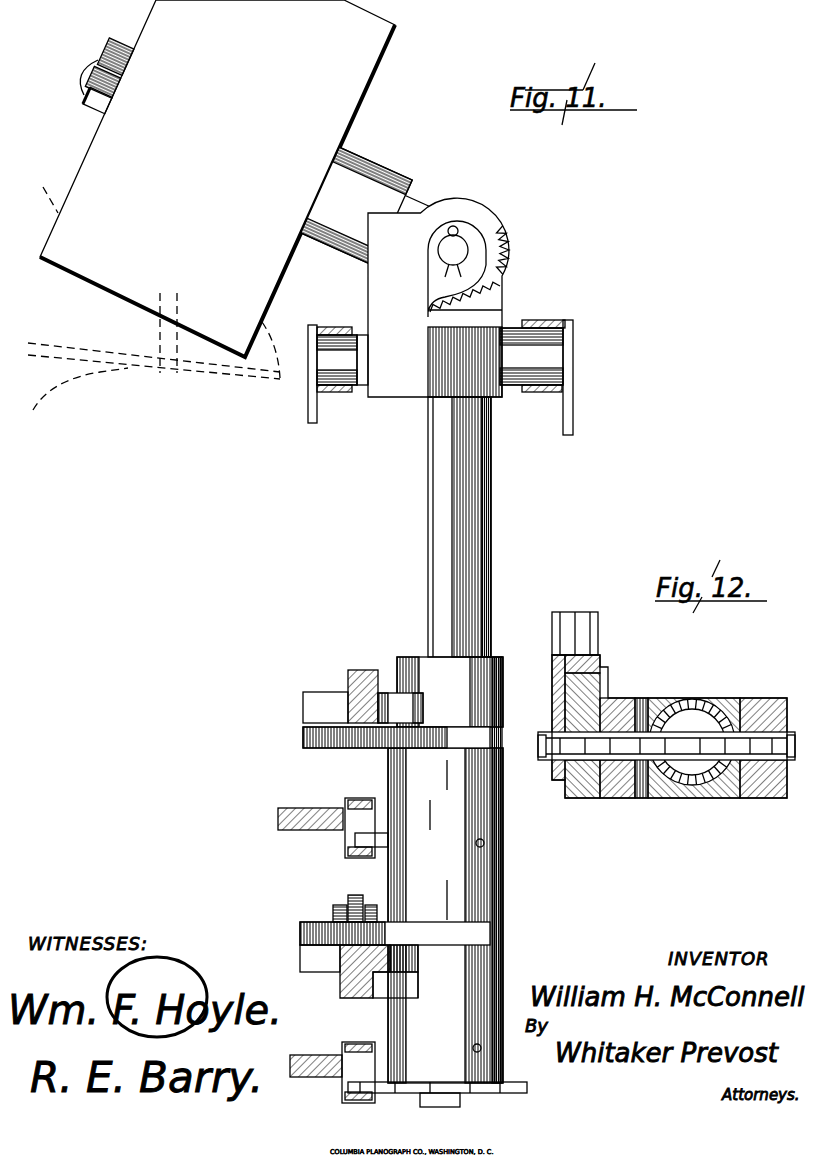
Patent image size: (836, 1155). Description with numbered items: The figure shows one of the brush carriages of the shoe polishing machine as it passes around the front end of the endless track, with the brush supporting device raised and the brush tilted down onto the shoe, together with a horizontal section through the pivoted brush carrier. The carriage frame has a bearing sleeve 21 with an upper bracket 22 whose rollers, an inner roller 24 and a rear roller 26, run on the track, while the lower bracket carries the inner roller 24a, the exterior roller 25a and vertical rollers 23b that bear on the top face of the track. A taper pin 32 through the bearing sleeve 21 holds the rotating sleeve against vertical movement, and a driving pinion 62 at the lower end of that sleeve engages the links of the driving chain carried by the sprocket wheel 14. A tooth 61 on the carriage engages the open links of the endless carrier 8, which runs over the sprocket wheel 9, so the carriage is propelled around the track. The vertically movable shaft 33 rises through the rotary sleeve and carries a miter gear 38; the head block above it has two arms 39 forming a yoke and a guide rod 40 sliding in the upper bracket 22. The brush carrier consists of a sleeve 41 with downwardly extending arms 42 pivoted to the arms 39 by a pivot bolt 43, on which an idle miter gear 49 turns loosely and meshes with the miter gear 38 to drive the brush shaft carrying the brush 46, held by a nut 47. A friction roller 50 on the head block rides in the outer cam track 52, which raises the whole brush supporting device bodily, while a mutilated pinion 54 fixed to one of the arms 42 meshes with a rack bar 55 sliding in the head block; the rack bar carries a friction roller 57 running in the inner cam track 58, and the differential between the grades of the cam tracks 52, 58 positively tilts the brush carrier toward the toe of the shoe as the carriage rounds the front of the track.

In FIG. 11, the endless carrier 8 is at (350, 800).
In FIG. 11, the sprocket wheel 9 is at (286, 808).
In FIG. 11, the sprocket wheel 14 is at (310, 1057).
In FIG. 11, the bearing sleeve 21 is at (503, 900).
In FIG. 11, the upper bracket 22 is at (305, 730).
In FIG. 11, the vertical rollers 23b is at (340, 905).
In FIG. 11, the inner roller 24 is at (322, 690).
In FIG. 11, the inner roller of lower bracket 24a is at (318, 967).
In FIG. 11, the exterior roller of lower bracket 25a is at (378, 999).
In FIG. 11, the rear roller 26 is at (401, 692).
In FIG. 11, the pin 32 is at (486, 844).
In FIG. 11, the vertically movable shaft 33 is at (440, 538).
In FIG. 12, the miter gear 38 is at (692, 799).
In FIG. 11, the arms of head block 39 is at (503, 300).
In FIG. 12, the arms of head block 39 is at (627, 799).
In FIG. 11, the guide rod 40 is at (476, 520).
In FIG. 11, the sleeve 41 is at (367, 161).
In FIG. 11, the arms of brush carrier 42 is at (418, 192).
In FIG. 12, the arms of brush carrier 42 is at (617, 697).
In FIG. 11, the pivot bolt 43 is at (468, 249).
In FIG. 12, the pivot bolt 43 is at (678, 738).
In FIG. 11, the brush 46 is at (398, 26).
In FIG. 11, the nut 47 is at (112, 48).
In FIG. 12, the idle miter gear 49 is at (728, 800).
In FIG. 11, the friction roller 50 is at (545, 363).
In FIG. 11, the cam track 52 is at (540, 393).
In FIG. 11, the pinion 54 is at (498, 228).
In FIG. 12, the pinion 54 is at (578, 800).
In FIG. 11, the rack bar 55 is at (368, 398).
In FIG. 12, the rack bar 55 is at (570, 657).
In FIG. 11, the friction roller 57 is at (330, 370).
In FIG. 12, the friction roller 57 is at (578, 618).
In FIG. 11, the cam track 58 is at (334, 327).
In FIG. 11, the tooth 61 is at (350, 843).
In FIG. 11, the driving pinion 62 is at (505, 1084).